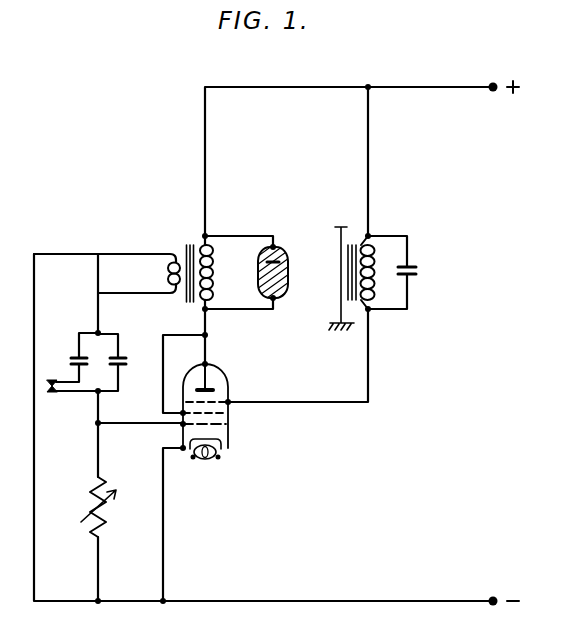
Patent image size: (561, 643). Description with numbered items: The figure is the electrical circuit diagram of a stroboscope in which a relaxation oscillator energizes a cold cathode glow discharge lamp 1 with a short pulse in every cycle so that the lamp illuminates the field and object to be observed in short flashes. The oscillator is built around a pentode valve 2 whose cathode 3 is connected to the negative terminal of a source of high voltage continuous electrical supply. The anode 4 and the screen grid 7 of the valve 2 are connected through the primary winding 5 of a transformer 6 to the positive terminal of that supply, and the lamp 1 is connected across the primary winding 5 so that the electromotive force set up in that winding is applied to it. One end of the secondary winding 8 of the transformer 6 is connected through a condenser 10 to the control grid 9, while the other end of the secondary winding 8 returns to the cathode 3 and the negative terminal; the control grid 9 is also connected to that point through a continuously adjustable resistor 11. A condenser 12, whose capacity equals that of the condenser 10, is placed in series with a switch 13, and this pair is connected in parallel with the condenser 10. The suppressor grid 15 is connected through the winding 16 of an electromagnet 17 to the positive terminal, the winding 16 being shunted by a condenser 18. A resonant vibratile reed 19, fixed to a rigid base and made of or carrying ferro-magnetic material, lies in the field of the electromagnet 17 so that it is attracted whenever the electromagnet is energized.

The cold cathode glow discharge lamp 1 is at (280, 256).
The pentode valve 2 is at (229, 431).
The cathode 3 is at (223, 440).
The anode 4 is at (212, 388).
The primary winding 5 is at (213, 273).
The transformer 6 is at (188, 245).
The screen grid 7 is at (191, 412).
The secondary winding 8 is at (166, 273).
The control grid 9 is at (207, 423).
The condenser 10 is at (122, 361).
The continuously adjustable resistor 11 is at (105, 508).
The condenser 12 is at (75, 360).
The switch 13 is at (47, 386).
The suppressor grid 15 is at (218, 402).
The winding 16 is at (375, 261).
The electromagnet 17 is at (353, 243).
The condenser 18 is at (416, 272).
The resonant vibratile reed 19 is at (341, 293).